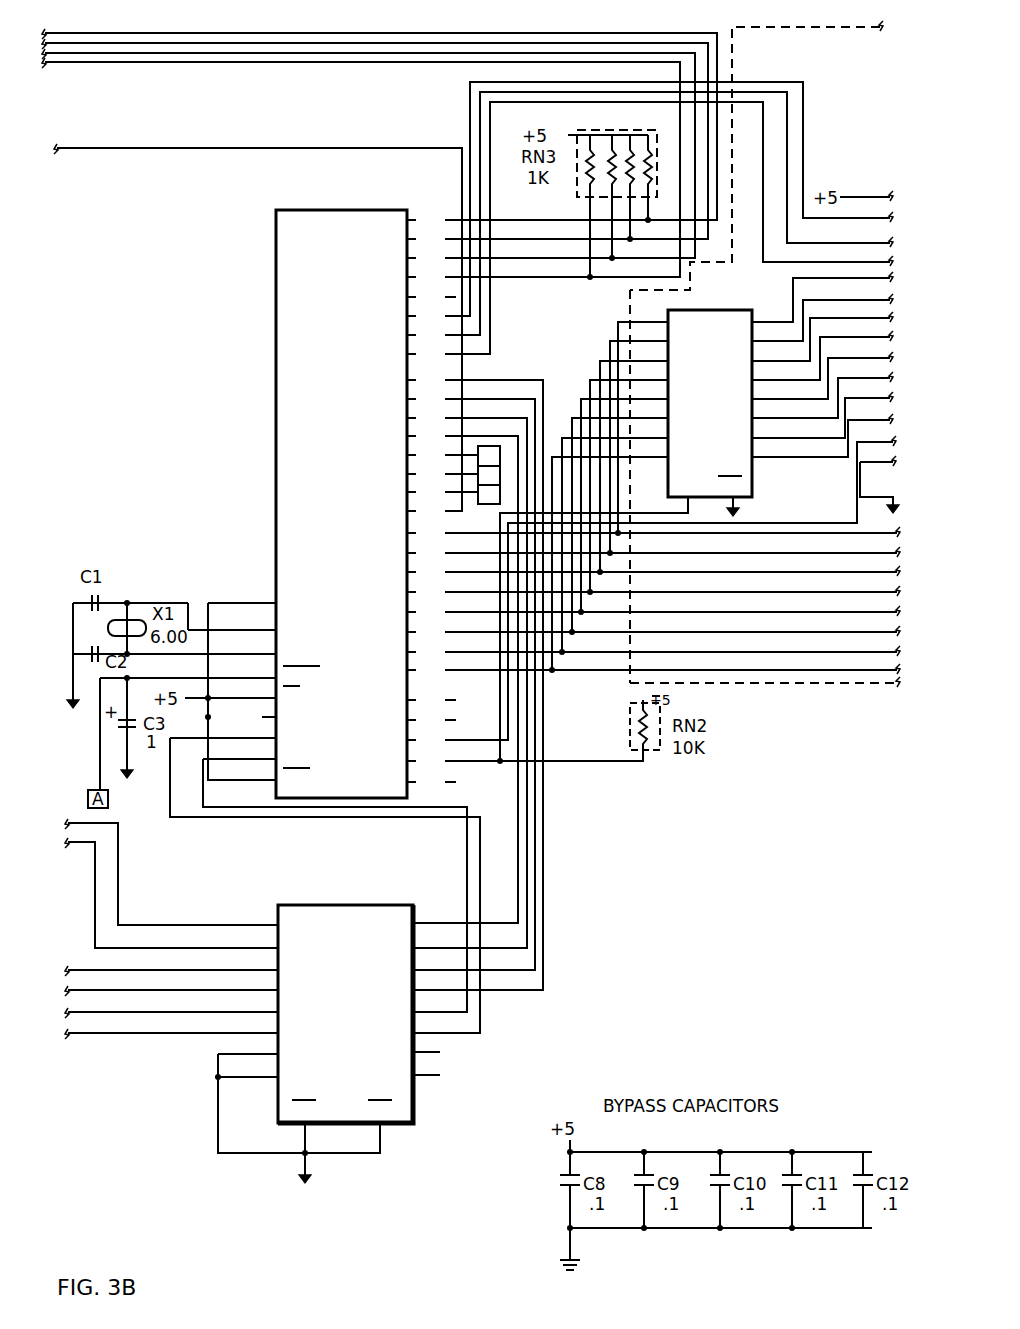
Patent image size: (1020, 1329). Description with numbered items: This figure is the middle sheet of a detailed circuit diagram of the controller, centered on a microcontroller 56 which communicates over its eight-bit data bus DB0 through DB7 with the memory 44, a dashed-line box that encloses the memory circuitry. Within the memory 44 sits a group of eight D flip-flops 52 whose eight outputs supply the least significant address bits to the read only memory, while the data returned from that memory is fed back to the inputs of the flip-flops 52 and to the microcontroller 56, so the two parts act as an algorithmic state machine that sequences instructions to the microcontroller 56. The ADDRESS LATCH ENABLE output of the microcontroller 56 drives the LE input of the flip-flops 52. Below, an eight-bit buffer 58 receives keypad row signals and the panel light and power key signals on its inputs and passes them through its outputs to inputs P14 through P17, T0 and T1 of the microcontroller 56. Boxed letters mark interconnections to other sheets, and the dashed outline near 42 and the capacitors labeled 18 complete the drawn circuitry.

The microcontroller 56 is at (356, 208).
The D flip-flops 52 is at (752, 480).
The eight-bit buffer 58 is at (413, 1125).
The memory 44 is at (778, 683).
The dashed connection region corner 42 is at (626, 683).
The capacitors C1 C2 18 is at (88, 641).